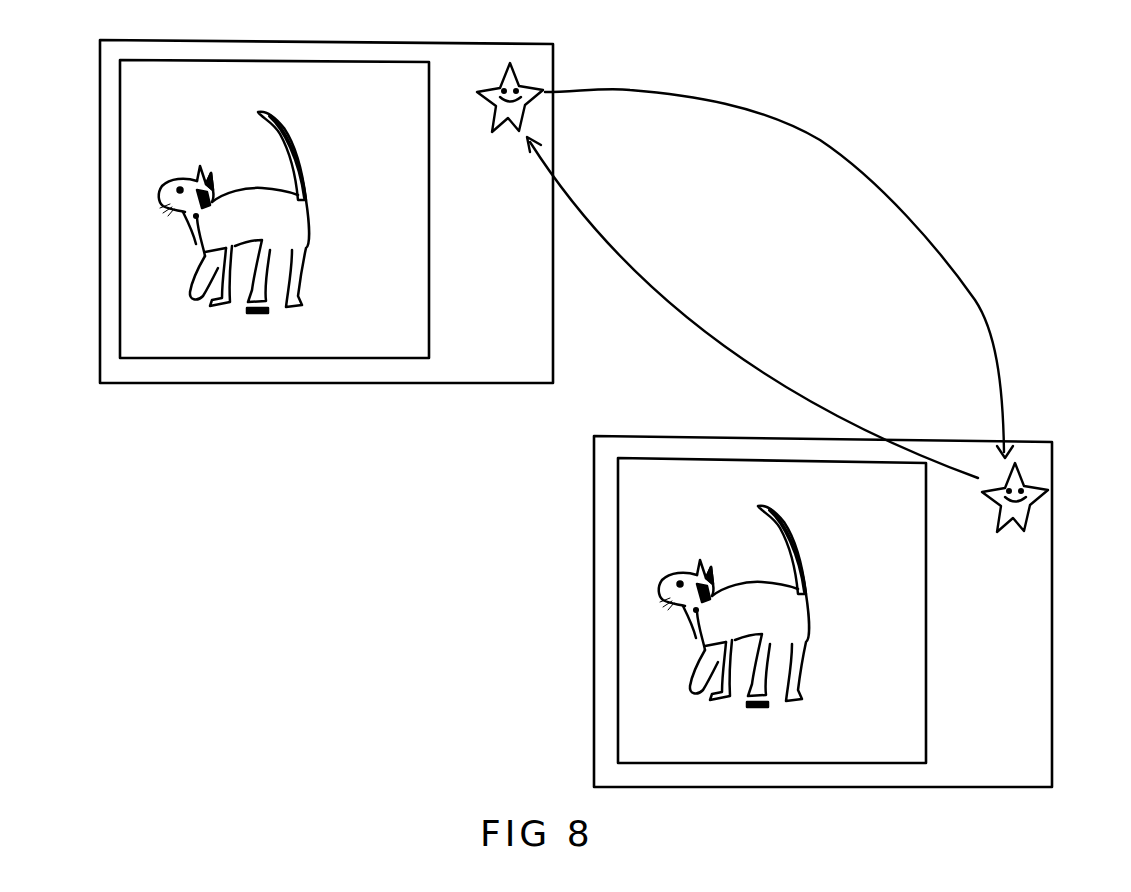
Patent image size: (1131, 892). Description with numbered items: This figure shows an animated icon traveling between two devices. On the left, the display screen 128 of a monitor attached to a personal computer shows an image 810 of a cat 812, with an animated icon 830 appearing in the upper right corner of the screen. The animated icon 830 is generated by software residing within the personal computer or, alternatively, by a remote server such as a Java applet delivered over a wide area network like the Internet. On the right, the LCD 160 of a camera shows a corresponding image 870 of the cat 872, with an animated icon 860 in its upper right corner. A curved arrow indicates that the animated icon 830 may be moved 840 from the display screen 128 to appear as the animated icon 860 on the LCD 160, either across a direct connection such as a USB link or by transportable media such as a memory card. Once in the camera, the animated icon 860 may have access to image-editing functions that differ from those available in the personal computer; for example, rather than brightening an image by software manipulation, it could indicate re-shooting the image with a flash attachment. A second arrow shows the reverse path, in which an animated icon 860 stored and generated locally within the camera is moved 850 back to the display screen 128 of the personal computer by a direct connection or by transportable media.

The display screen 128 is at (100, 318).
The LCD 160 is at (593, 716).
The image displayed on first display 810 is at (120, 157).
The object in image 812 is at (163, 206).
The animated icon 830 is at (542, 90).
The moving of animated icon 840 is at (860, 164).
The moving of animated icon 850 is at (717, 338).
The animated icon 860 is at (1038, 475).
The image displayed on second display 870 is at (618, 512).
The object in image on second display 872 is at (662, 588).